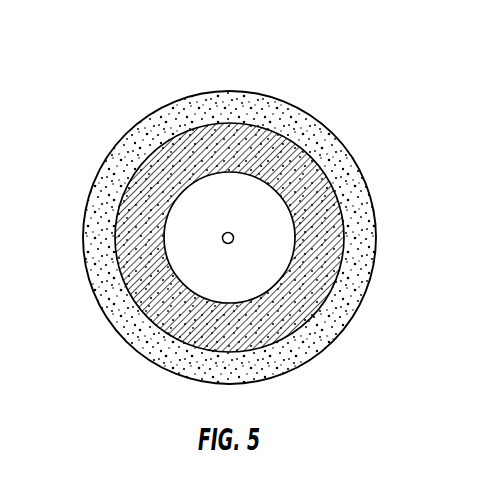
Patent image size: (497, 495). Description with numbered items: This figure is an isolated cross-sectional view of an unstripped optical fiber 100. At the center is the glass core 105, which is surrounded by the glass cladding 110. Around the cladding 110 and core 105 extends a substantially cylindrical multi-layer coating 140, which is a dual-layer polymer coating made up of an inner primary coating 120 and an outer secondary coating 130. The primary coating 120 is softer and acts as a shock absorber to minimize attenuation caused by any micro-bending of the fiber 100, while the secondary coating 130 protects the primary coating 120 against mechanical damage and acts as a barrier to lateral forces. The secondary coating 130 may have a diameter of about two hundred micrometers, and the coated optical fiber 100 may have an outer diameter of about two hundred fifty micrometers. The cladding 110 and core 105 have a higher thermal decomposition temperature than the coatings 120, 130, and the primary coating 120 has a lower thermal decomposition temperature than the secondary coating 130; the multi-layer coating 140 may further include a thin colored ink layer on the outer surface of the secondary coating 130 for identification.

The optical fiber 100 is at (78, 168).
The glass core 105 is at (234, 237).
The glass cladding 110 is at (255, 260).
The primary coating 120 is at (325, 180).
The secondary coating 130 is at (307, 110).
The multi-layer coating 140 is at (279, 86).